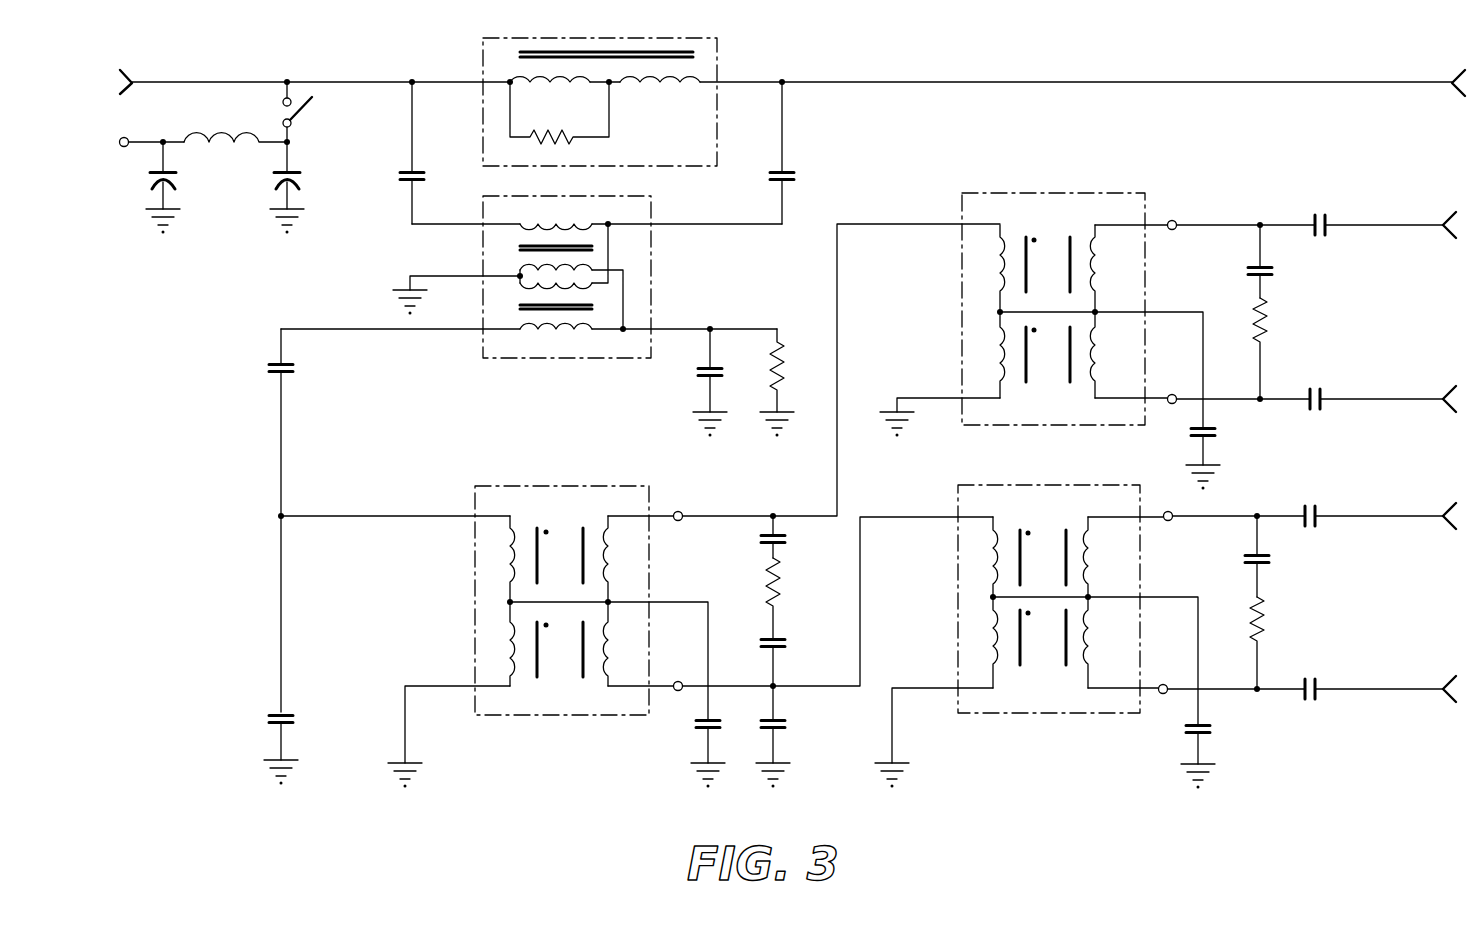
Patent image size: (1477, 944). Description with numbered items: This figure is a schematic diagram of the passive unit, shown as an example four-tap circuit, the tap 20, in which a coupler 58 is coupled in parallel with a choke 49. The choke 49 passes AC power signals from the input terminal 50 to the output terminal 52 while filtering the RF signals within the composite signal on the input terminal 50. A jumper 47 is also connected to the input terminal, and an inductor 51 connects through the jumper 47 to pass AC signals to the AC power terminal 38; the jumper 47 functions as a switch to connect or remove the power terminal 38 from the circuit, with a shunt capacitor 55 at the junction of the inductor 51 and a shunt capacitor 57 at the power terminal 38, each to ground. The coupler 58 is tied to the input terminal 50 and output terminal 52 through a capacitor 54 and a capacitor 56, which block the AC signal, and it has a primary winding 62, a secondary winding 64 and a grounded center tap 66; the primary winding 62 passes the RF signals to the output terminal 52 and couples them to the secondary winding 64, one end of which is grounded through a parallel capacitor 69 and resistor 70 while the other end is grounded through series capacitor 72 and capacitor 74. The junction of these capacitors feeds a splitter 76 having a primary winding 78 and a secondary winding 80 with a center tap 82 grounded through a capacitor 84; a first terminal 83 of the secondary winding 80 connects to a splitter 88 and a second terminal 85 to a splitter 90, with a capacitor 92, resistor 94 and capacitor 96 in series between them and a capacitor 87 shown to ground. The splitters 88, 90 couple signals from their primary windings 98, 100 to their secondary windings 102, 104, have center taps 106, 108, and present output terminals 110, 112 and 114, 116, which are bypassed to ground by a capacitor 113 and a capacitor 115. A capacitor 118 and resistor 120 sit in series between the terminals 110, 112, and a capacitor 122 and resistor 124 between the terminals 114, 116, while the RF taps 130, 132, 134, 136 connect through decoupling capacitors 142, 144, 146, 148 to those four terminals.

The tap 20 is at (453, 810).
The AC power terminal 38 is at (125, 137).
The jumper 47 is at (312, 100).
The choke 49 is at (720, 70).
The input terminal 50 is at (130, 80).
The inductor 51 is at (228, 135).
The output terminal 52 is at (1456, 78).
The capacitor 54 is at (416, 170).
The shunt capacitor 55 is at (300, 172).
The capacitor 56 is at (790, 172).
The shunt capacitor 57 is at (175, 175).
The coupler 58 is at (655, 215).
The primary winding 62 is at (540, 226).
The secondary winding 64 is at (540, 330).
The center tap 66 is at (520, 276).
The capacitor 69 is at (713, 368).
The resistor 70 is at (780, 362).
The capacitor 72 is at (290, 364).
The capacitor 74 is at (288, 715).
The splitter 76 is at (598, 486).
The primary winding 78 is at (522, 556).
The secondary winding 80 is at (596, 556).
The center tap 82 is at (606, 606).
The first terminal 83 is at (681, 512).
The capacitor 84 is at (700, 728).
The second terminal 85 is at (680, 682).
The capacitor 87 is at (786, 728).
The splitter 88 is at (1090, 192).
The splitter 90 is at (1090, 485).
The capacitor 92 is at (785, 540).
The resistor 94 is at (783, 580).
The capacitor 96 is at (786, 645).
The primary winding 98 is at (1017, 262).
The primary winding 100 is at (1005, 560).
The secondary winding 102 is at (1080, 262).
The secondary winding 104 is at (1075, 553).
The center tap 106 is at (1097, 315).
The center tap 108 is at (1092, 600).
The output terminal 110 is at (1176, 230).
The output terminal 112 is at (1190, 370).
The capacitor 113 is at (1212, 435).
The output terminal 114 is at (1176, 521).
The capacitor 115 is at (1210, 730).
The output terminal 116 is at (1178, 657).
The capacitor 118 is at (1272, 270).
The resistor 120 is at (1268, 300).
The capacitor 122 is at (1270, 558).
The resistor 124 is at (1265, 600).
The RF tap 130 is at (1448, 222).
The RF tap 132 is at (1448, 395).
The RF tap 134 is at (1443, 512).
The RF tap 136 is at (1440, 685).
The decoupling capacitor 142 is at (1345, 200).
The decoupling capacitor 144 is at (1312, 390).
The decoupling capacitor 146 is at (1318, 505).
The decoupling capacitor 148 is at (1320, 678).